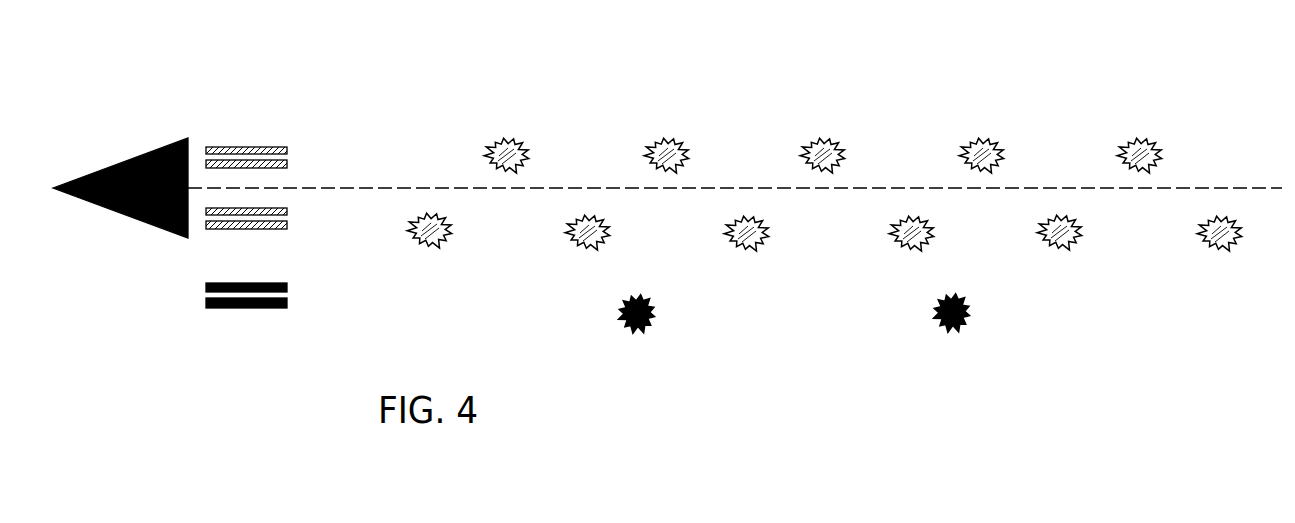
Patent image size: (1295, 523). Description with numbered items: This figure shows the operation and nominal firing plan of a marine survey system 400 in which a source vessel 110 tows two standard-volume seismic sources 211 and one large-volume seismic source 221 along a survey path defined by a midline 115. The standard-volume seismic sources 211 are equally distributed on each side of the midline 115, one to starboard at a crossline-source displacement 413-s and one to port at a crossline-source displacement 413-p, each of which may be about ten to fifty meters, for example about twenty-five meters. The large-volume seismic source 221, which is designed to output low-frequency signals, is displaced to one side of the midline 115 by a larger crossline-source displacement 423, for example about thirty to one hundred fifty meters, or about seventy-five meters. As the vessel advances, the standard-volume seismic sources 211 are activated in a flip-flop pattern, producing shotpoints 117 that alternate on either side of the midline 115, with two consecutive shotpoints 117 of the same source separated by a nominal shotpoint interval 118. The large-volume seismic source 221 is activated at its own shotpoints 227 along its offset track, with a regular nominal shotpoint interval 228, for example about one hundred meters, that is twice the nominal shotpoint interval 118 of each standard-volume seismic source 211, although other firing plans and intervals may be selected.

The marine survey system 400 is at (1167, 60).
The source vessel 110 is at (103, 145).
The midline 115 is at (443, 185).
The standard-volume seismic source 211 is at (257, 223).
The crossline-source displacement 413-s is at (296, 157).
The crossline-source displacement 413-p is at (296, 189).
The crossline-source displacement 423 is at (257, 290).
The large-volume seismic source 221 is at (280, 320).
The shotpoint 117 is at (824, 169).
The nominal shotpoint interval 118 is at (1218, 262).
The shotpoint 227 is at (791, 363).
The nominal shotpoint interval 228 is at (793, 368).